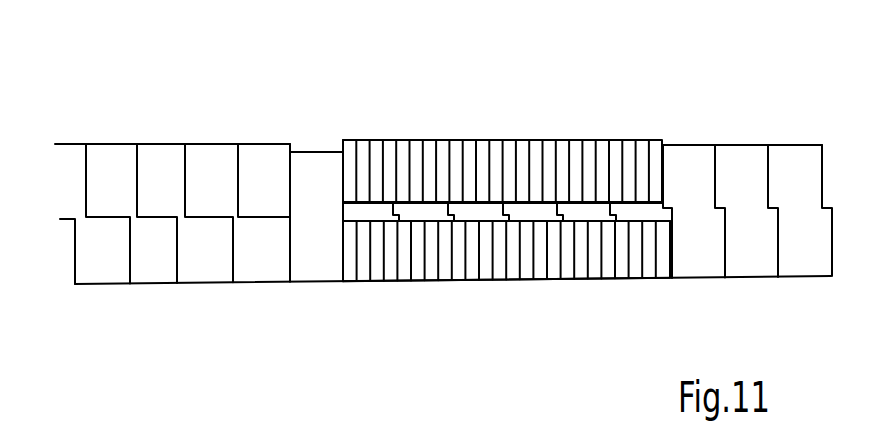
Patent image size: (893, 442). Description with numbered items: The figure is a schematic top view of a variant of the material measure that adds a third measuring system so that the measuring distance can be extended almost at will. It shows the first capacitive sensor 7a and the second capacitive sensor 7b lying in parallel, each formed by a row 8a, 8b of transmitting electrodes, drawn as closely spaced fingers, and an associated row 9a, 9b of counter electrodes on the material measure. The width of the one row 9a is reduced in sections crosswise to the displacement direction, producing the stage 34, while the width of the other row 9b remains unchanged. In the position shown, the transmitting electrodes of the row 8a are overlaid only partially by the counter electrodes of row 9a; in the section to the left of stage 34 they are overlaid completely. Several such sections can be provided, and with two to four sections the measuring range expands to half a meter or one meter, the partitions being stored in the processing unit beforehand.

The first capacitive sensor 7a is at (521, 104).
The second capacitive sensor 7b is at (518, 319).
The row of transmitting electrodes 8a is at (581, 172).
The row of transmitting electrodes 8b is at (581, 248).
The row of counter electrodes 9a is at (80, 193).
The row of counter electrodes 9b is at (72, 254).
The stage 34 is at (290, 143).